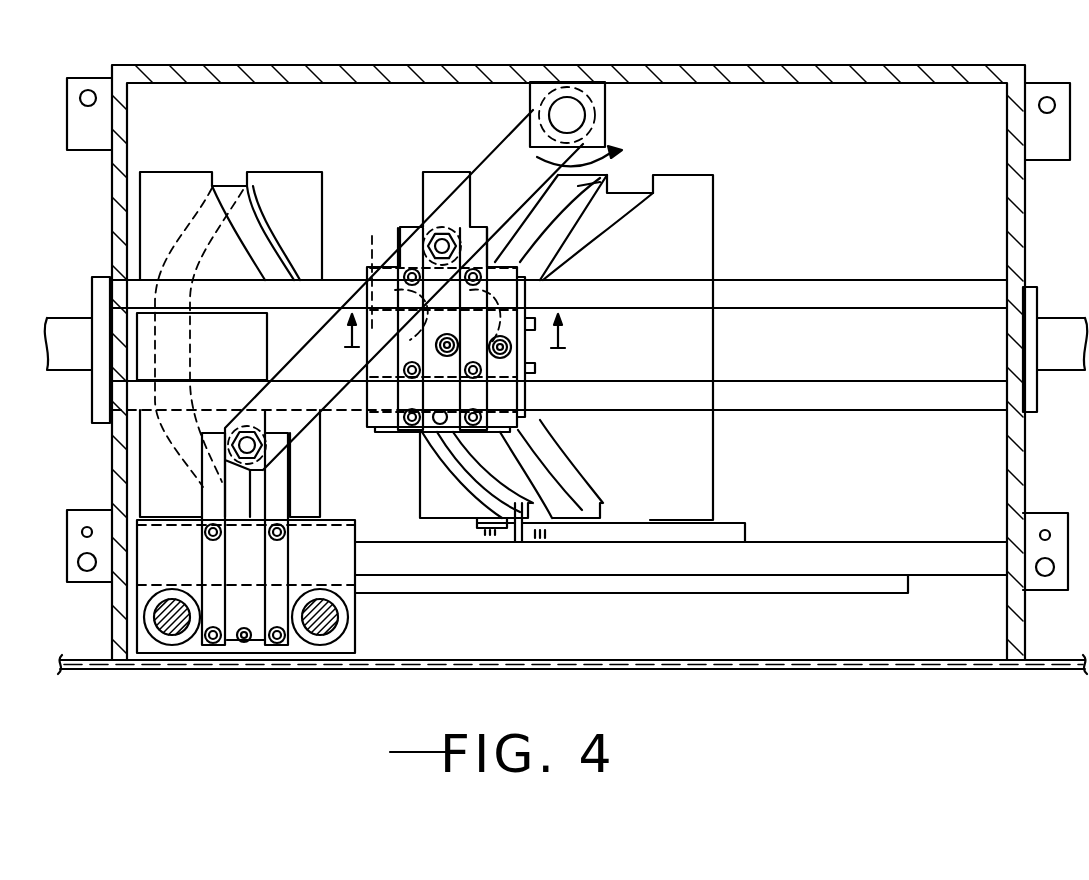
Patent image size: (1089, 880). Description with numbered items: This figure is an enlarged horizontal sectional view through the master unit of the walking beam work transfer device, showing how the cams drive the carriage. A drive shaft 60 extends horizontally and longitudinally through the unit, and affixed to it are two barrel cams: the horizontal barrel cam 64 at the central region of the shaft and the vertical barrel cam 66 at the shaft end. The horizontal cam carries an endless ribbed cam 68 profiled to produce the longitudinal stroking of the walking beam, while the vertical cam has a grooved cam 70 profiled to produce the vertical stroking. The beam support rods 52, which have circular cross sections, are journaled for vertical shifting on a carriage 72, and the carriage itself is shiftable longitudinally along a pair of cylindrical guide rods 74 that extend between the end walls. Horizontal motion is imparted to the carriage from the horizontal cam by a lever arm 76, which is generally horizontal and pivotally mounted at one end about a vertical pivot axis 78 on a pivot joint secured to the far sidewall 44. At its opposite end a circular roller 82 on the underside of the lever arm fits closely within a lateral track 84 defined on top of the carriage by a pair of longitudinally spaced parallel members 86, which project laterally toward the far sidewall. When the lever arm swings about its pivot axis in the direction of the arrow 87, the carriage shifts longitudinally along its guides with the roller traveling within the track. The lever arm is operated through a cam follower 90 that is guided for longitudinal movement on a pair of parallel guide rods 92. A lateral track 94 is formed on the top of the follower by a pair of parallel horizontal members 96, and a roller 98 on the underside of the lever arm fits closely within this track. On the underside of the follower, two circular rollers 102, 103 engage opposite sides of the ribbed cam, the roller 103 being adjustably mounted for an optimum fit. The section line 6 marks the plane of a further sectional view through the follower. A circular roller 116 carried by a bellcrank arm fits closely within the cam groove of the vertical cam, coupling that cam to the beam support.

The section line 6- 6 is at (456, 331).
The sidewall 44 is at (722, 69).
The vertical rods 52 is at (318, 633).
The drive shaft 60 is at (940, 345).
The barrel cam 64 is at (693, 175).
The barrel cam 66 is at (292, 172).
The ribbed cam 68 is at (607, 177).
The grooved cam 70 is at (227, 183).
The carriage 72 is at (357, 637).
The guide rods 74 is at (978, 568).
The lever arm 76 is at (513, 157).
The pivot axis 78 is at (573, 108).
The roller 82 is at (202, 346).
The lateral track 84 is at (257, 564).
The parallel members 86 is at (220, 567).
The arrow 87 is at (607, 131).
The cam follower 90 is at (527, 413).
The guide rods 92 is at (833, 410).
The lateral track 94 is at (408, 428).
The parallel horizontal members 96 is at (500, 263).
The roller 98 is at (450, 230).
The roller 102 is at (368, 272).
The roller 103 is at (583, 282).
The roller 116 is at (235, 512).